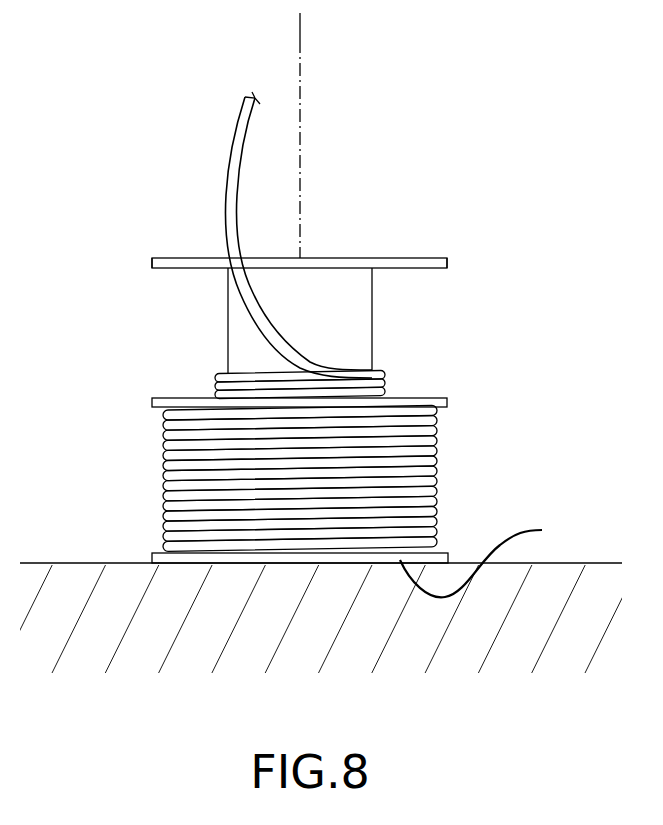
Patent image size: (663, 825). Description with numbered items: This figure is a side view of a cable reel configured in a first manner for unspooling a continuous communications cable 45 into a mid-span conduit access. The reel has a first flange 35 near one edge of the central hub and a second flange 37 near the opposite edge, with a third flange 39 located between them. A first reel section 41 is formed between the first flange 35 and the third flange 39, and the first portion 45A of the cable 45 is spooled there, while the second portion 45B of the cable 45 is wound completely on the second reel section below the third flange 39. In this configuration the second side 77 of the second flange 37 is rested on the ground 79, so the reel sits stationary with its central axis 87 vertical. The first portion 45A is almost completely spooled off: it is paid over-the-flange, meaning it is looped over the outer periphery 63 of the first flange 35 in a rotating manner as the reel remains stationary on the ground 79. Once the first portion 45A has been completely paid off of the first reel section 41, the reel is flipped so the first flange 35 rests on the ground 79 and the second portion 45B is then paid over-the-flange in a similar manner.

The central axis 87 is at (300, 45).
The communications cable 45 is at (230, 152).
The first flange 35 is at (418, 258).
The outer periphery 63 is at (152, 263).
The first reel section 41 is at (395, 312).
The first portion 45A is at (385, 378).
The third flange 39 is at (175, 398).
The second portion 45B is at (427, 485).
The second flange 37 is at (443, 552).
The ground 79 is at (326, 629).
The second side 77 is at (489, 556).